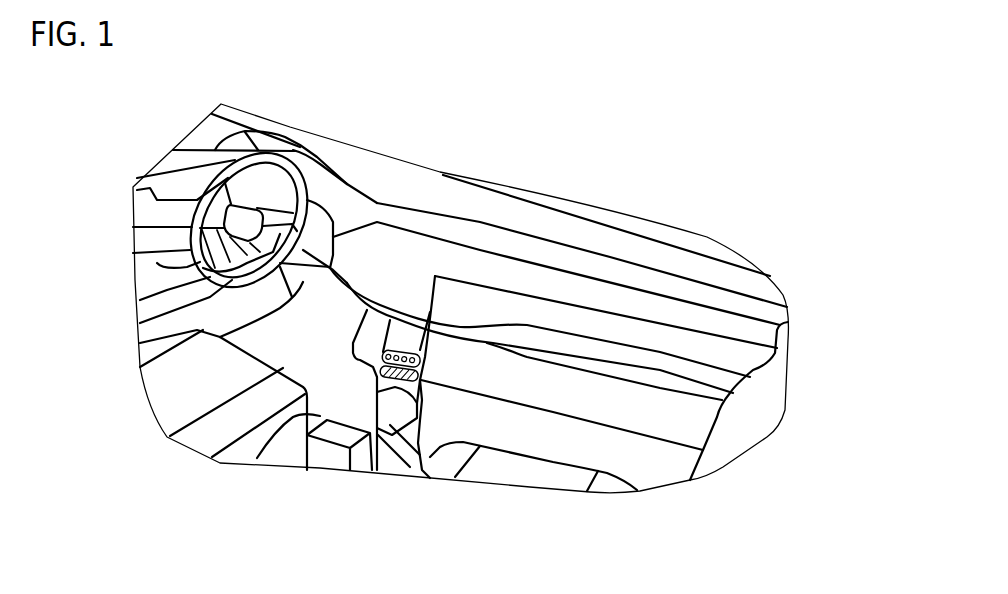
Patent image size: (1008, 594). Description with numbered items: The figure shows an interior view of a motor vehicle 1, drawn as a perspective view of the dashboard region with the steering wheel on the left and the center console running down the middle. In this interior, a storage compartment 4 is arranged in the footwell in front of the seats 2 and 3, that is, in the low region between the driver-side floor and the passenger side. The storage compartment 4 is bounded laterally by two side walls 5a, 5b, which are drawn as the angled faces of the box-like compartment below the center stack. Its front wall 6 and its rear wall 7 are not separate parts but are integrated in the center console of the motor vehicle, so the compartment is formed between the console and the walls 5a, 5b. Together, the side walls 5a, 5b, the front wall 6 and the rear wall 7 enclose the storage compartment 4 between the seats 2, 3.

The instrument panel (dashboard) 1 is at (386, 171).
The seat 2 is at (162, 418).
The seat 3 is at (537, 478).
The storage compartment 4 is at (377, 433).
The side wall 5a is at (390, 443).
The side wall 5b is at (367, 418).
The front wall 6 is at (407, 410).
The rear wall 7 is at (263, 450).